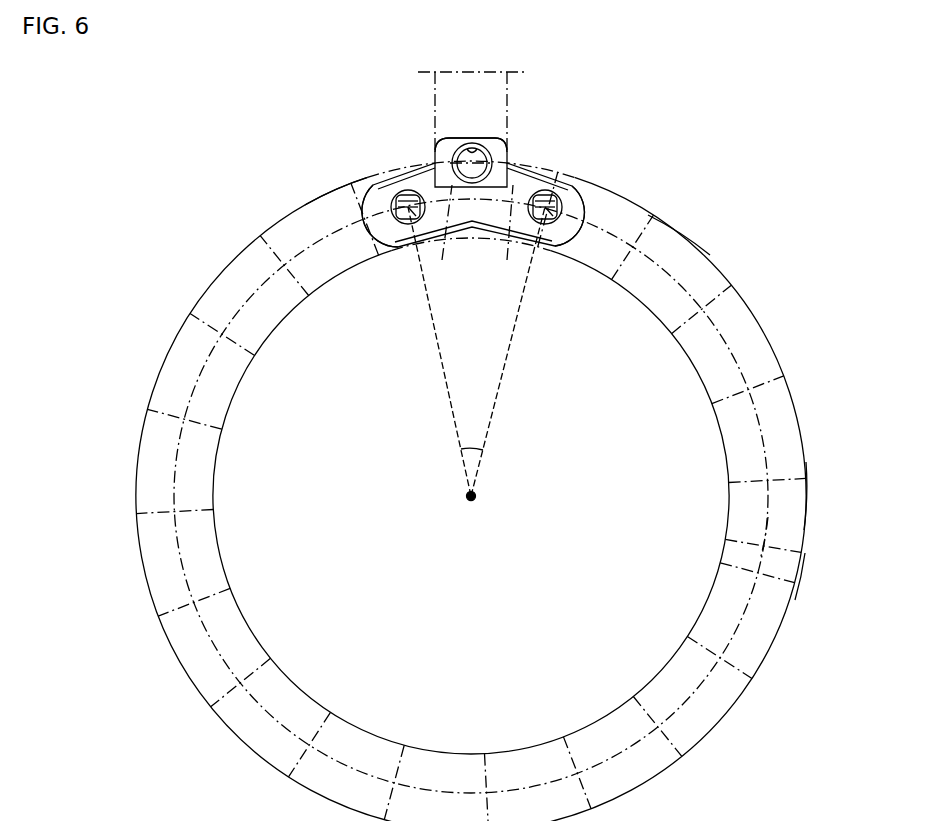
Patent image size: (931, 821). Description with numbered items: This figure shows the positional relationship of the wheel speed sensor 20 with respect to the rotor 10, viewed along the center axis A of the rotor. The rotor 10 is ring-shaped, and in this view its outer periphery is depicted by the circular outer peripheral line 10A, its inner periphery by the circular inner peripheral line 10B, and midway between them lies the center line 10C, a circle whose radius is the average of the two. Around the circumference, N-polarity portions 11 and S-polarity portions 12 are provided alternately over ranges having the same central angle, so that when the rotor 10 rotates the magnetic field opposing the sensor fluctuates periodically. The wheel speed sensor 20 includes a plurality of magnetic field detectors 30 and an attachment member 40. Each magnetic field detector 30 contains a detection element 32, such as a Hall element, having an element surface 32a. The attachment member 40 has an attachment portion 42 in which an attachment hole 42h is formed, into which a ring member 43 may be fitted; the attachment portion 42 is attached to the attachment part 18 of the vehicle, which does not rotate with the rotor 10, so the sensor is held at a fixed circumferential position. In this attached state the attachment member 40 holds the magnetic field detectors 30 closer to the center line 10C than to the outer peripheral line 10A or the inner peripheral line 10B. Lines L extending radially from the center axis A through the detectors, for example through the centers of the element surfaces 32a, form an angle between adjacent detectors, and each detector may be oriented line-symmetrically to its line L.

The rotor 10 is at (768, 333).
The outer peripheral line 10A is at (807, 462).
The inner peripheral line 10B is at (805, 553).
The center line 10C is at (768, 517).
The N-polarity portions 11 is at (305, 205).
The S-polarity portions 12 is at (364, 181).
The attachment part 18 is at (509, 84).
The wheel speed sensor 20 is at (388, 108).
The magnetic field detectors 30 is at (407, 224).
The detection elements 32 is at (392, 240).
The element surface 32a is at (475, 235).
The attachment member 40 is at (565, 182).
The attachment portion 42 is at (497, 139).
The attachment hole 42h is at (478, 148).
The ring member 43 is at (454, 150).
The center axis A is at (476, 499).
The line L is at (452, 420).